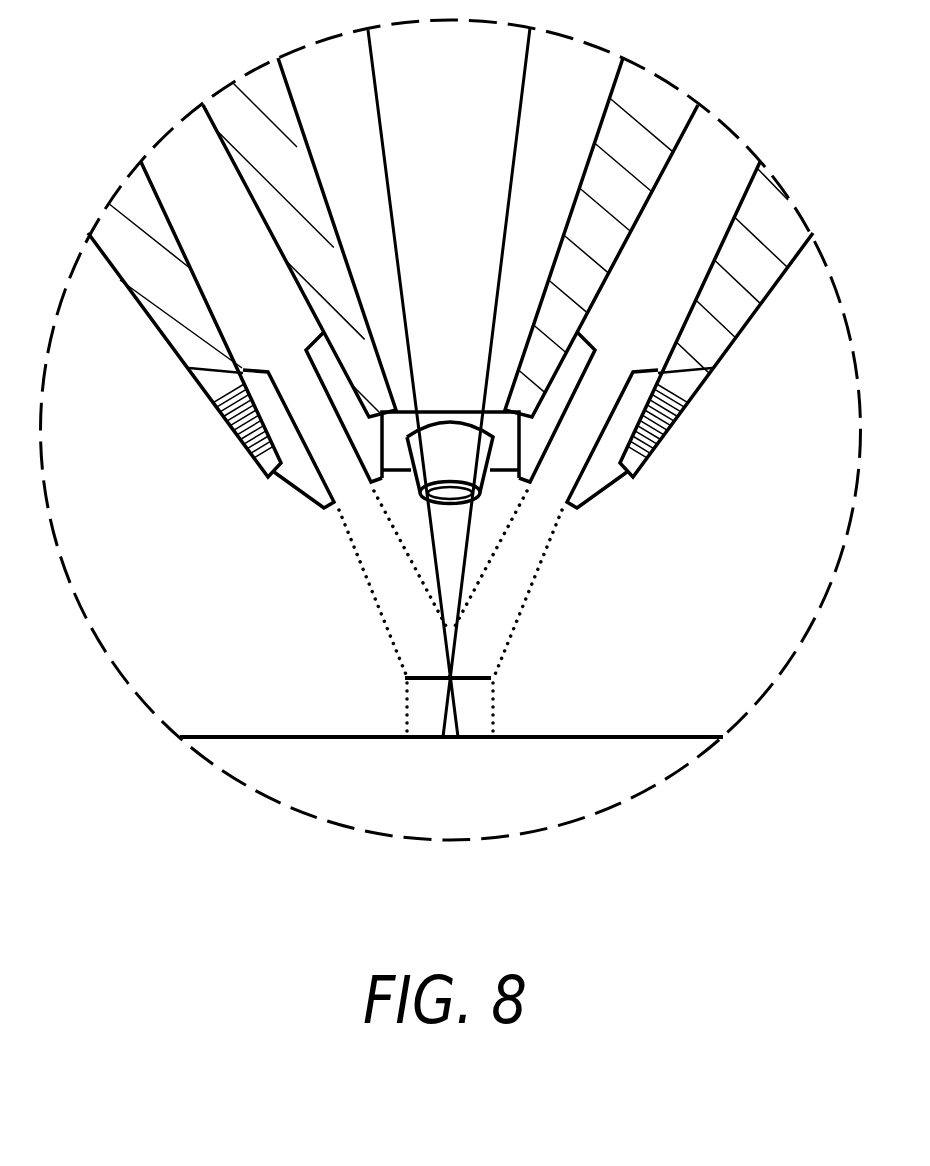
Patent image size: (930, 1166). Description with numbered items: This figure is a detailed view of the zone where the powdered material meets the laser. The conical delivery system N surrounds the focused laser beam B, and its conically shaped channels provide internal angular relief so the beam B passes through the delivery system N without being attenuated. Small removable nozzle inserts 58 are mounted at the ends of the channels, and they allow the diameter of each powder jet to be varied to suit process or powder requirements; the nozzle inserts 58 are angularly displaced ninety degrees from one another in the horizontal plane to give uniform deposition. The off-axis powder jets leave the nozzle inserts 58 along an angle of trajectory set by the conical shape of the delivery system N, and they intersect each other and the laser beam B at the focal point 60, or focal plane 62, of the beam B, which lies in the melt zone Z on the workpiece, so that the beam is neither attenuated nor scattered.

The laser beam B is at (471, 145).
The delivery system N is at (733, 305).
The nozzle insert 58 is at (300, 473).
The focal plane 62 is at (492, 680).
The focal point 60 is at (450, 677).
The melt zone Z is at (449, 690).